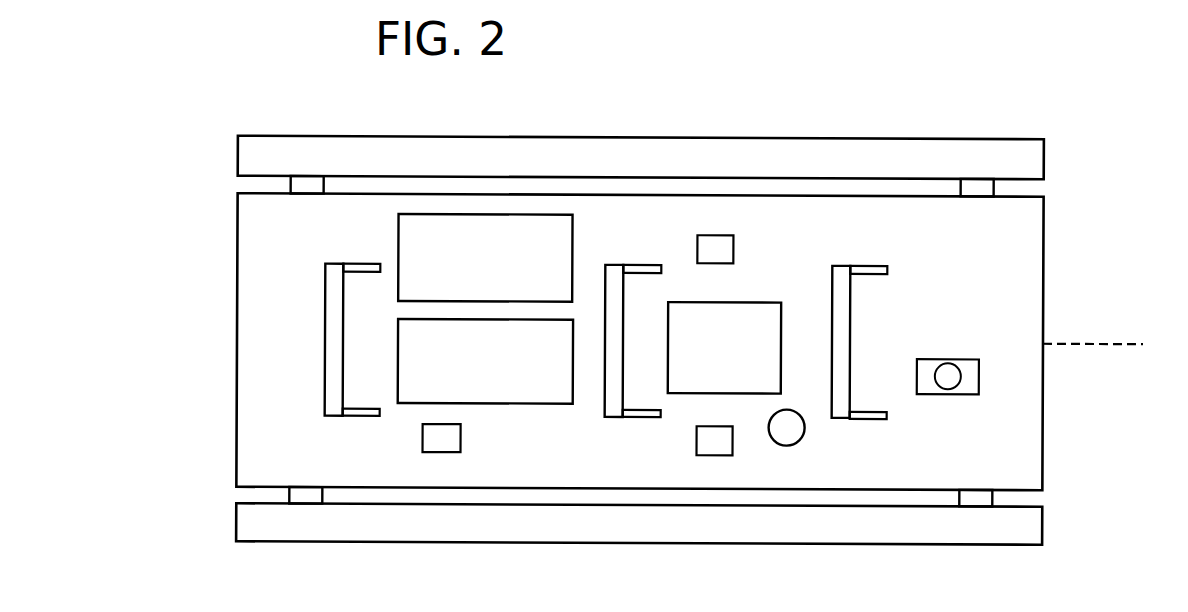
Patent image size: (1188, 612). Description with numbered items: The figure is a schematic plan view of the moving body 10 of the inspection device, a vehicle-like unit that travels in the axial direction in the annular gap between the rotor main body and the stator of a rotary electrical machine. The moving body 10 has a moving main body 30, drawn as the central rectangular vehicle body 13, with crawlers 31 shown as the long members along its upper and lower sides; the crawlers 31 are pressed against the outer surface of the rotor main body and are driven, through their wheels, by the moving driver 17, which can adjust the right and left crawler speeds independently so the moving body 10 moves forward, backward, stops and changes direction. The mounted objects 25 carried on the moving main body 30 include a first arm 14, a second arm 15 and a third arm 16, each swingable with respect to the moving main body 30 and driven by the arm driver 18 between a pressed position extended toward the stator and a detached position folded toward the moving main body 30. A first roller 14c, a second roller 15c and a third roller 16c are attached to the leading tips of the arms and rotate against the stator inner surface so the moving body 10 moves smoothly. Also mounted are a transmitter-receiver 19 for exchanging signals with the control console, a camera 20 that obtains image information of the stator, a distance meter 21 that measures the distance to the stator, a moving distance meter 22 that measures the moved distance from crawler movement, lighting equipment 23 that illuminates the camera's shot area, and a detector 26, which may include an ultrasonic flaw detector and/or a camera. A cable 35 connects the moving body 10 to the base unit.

The moving body 10 is at (192, 186).
The moving body 13 is at (222, 289).
The first arm 14 is at (329, 355).
The first roller 14c is at (333, 272).
The second arm 15 is at (649, 347).
The second roller 15c is at (614, 272).
The third arm 16 is at (890, 319).
The third roller 16c is at (843, 272).
The moving driver 17 is at (522, 405).
The arm driver 18 is at (398, 245).
The transmitter-receiver 19 is at (735, 300).
The camera 20 is at (952, 357).
The distance meter 21 is at (461, 437).
The moving distance meter 22 is at (733, 448).
The lighting equipment 23 is at (800, 439).
The mounted objects 25 is at (1027, 241).
The detector 26 is at (733, 240).
The moving main body 30 is at (245, 425).
The crawlers 31 is at (587, 533).
The cable 35 is at (1107, 342).